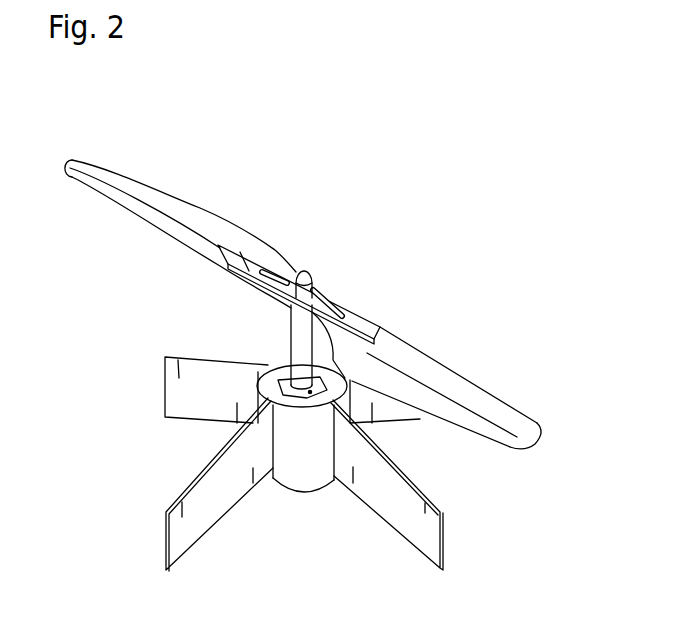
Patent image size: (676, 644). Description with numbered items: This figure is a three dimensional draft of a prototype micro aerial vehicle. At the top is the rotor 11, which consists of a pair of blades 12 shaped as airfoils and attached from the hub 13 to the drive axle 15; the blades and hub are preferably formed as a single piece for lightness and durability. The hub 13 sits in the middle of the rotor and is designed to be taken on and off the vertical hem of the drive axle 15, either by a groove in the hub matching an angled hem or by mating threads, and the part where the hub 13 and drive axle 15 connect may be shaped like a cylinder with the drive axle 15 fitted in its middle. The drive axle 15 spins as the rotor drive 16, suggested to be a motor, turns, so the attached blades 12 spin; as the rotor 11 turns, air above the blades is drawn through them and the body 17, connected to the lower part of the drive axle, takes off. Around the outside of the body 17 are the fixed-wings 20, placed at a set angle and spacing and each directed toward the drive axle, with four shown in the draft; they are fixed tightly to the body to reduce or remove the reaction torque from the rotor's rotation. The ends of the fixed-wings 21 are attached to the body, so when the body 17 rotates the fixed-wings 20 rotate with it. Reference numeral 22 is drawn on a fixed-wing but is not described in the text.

The rotor 11 is at (303, 272).
The pair of blades 12 is at (145, 210).
The hub 13 is at (358, 320).
The drive axle 15 is at (291, 341).
The rotor drive 16 is at (260, 378).
The body 17 is at (294, 484).
The fixed-wings 20 is at (324, 487).
The ends of the fixed-wings 21 is at (340, 435).
The front fin 22 is at (408, 493).